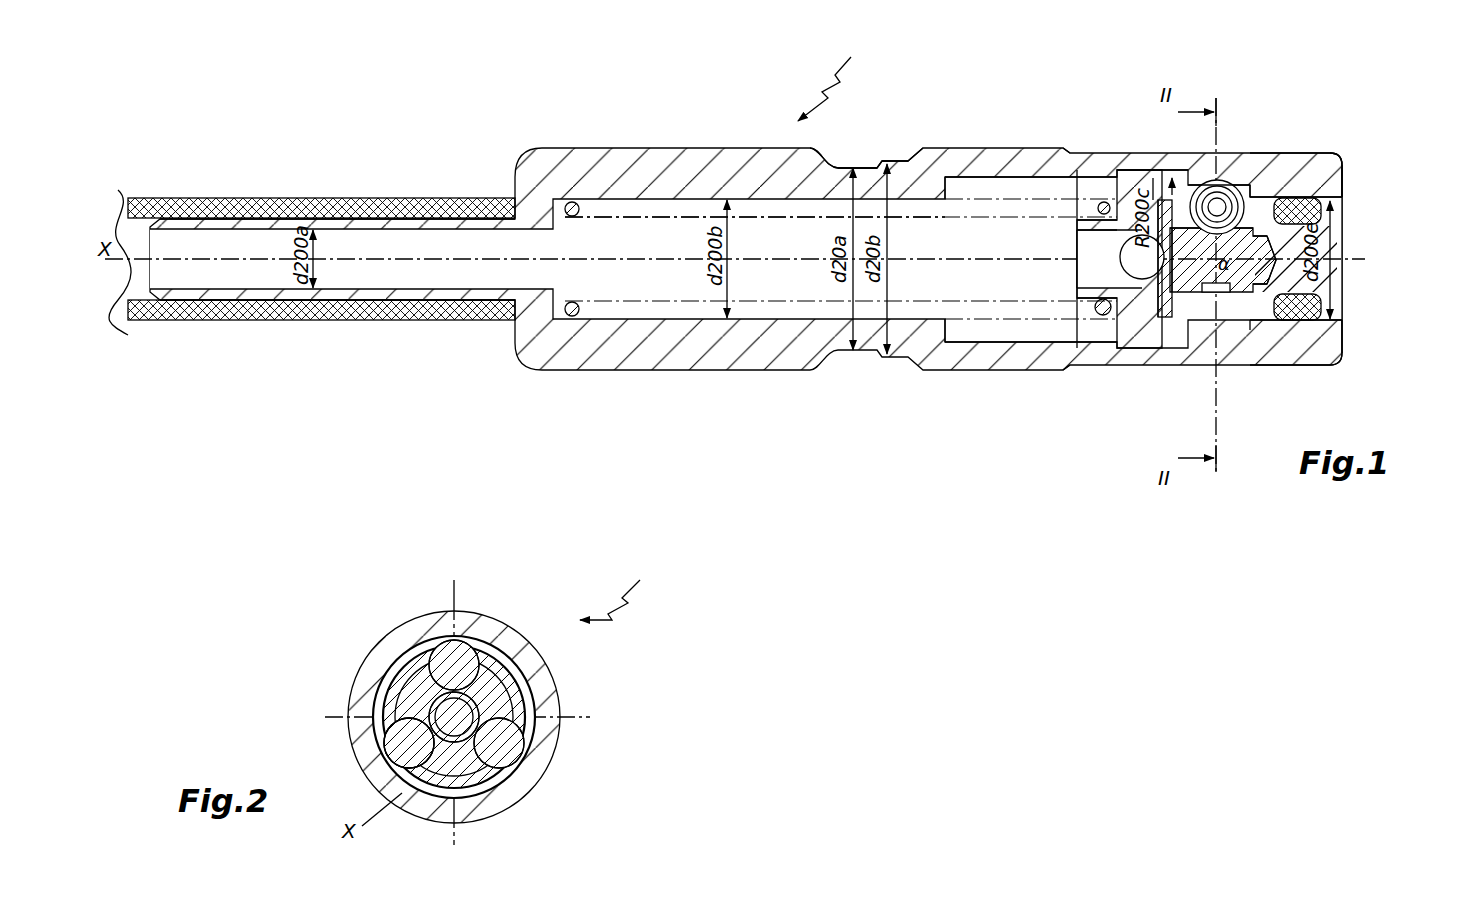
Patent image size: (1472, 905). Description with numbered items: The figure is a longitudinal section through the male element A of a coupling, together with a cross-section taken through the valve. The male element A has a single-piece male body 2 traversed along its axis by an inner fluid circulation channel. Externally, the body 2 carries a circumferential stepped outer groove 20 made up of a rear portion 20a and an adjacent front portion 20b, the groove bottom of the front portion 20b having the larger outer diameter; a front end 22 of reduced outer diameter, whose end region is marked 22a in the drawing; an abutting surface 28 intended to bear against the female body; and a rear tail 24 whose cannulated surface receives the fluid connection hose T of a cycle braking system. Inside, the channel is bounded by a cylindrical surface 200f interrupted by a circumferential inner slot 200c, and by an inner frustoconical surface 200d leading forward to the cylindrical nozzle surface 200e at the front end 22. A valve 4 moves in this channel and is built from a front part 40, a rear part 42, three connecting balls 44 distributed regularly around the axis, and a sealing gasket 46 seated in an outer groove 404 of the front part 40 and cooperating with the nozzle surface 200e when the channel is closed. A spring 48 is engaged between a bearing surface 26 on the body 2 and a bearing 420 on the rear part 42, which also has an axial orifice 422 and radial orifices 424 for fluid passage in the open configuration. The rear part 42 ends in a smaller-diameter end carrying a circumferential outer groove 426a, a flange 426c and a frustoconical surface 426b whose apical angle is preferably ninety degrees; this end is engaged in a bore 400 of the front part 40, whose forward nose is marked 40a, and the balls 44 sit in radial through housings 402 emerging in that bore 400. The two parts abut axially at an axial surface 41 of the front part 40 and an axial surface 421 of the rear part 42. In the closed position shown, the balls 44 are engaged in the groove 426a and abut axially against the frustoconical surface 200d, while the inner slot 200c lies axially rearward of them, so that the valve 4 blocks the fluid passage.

In FIG. 1, the male body 2 is at (645, 163).
In FIG. 2, the male body 2 is at (556, 762).
In FIG. 1, the valve 4 is at (1348, 527).
In FIG. 1, the outer groove 20 is at (957, 72).
In FIG. 1, the rear portion 20a is at (846, 162).
In FIG. 1, the front portion 20b is at (898, 157).
In FIG. 1, the front end 22 is at (1305, 170).
In FIG. 1, the end face 22a is at (1348, 179).
In FIG. 1, the rear tail 24 is at (425, 225).
In FIG. 1, the bearing surface 26 is at (578, 227).
In FIG. 1, the abutting surface 28 is at (1072, 146).
In FIG. 1, the front part 40 is at (1284, 339).
In FIG. 2, the front part 40 is at (449, 745).
In FIG. 1, the piston nose 40a is at (1348, 274).
In FIG. 1, the axial surface 41 is at (1133, 170).
In FIG. 1, the rear part 42 is at (1059, 246).
In FIG. 2, the rear part 42 is at (466, 752).
In FIG. 1, the connecting balls 44 is at (1210, 203).
In FIG. 2, the connecting balls 44 is at (520, 732).
In FIG. 1, the sealing gasket 46 is at (1337, 188).
In FIG. 1, the spring 48 is at (581, 314).
In FIG. 1, the inner slot 200c is at (1157, 196).
In FIG. 1, the inner frustoconical surface 200d is at (1224, 198).
In FIG. 1, the cylindrical nozzle surface 200e is at (1340, 200).
In FIG. 1, the cylindrical surface 200f is at (1008, 200).
In FIG. 1, the bore 400 is at (1122, 300).
In FIG. 1, the radial through housings 402 is at (1278, 261).
In FIG. 2, the radial through housings 402 is at (384, 743).
In FIG. 1, the outer groove 404 is at (1320, 335).
In FIG. 1, the bearing 420 is at (1117, 295).
In FIG. 1, the axial surface 421 is at (1181, 318).
In FIG. 1, the axial orifice 422 is at (1080, 236).
In FIG. 1, the radial orifices 424 is at (972, 182).
In FIG. 1, the outer groove 426a is at (1286, 200).
In FIG. 2, the outer groove 426a is at (512, 642).
In FIG. 1, the frustoconical surface 426b is at (1310, 217).
In FIG. 1, the flange 426c is at (1305, 318).
In FIG. 1, the fluid connection hose T is at (235, 200).
In FIG. 1, the male element A is at (831, 78).
In FIG. 2, the male element A is at (619, 589).